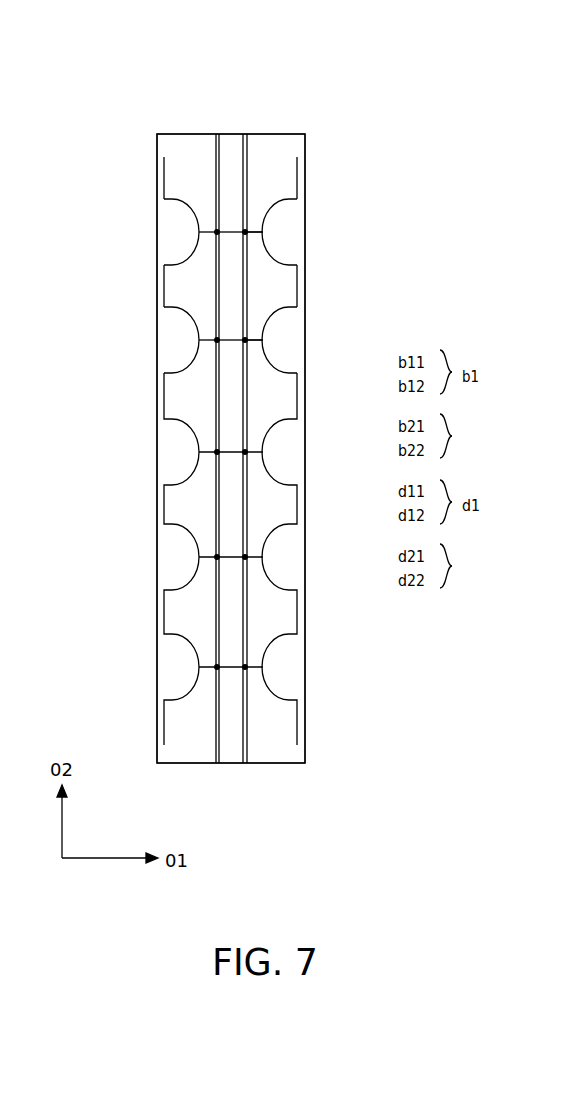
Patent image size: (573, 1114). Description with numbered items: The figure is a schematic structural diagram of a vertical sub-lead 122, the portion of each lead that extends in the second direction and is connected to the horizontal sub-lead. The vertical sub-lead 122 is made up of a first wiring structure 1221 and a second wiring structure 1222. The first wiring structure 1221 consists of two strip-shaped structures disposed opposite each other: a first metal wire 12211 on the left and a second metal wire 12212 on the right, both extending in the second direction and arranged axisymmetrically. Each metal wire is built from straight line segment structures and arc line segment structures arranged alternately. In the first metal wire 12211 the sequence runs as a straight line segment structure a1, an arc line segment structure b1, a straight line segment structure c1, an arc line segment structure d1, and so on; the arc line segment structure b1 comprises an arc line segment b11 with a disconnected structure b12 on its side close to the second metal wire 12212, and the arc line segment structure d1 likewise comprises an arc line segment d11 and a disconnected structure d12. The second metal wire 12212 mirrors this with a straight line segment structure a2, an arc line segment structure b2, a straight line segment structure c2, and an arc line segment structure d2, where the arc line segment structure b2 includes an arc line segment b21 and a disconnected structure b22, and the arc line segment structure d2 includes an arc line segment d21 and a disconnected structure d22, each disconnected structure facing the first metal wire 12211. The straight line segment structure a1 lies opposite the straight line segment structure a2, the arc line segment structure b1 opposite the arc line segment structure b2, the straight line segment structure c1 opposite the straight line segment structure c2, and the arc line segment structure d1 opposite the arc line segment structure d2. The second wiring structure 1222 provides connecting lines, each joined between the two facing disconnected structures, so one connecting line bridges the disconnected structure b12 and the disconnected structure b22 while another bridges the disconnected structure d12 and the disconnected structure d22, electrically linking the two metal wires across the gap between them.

The vertical sub-lead 122 is at (150, 80).
The first wiring structure 1221 is at (307, 388).
The first metal wire 12211 is at (197, 135).
The second metal wire 12212 is at (305, 135).
The second wiring structure 1222 is at (228, 764).
The straight line segment structure a1 is at (164, 183).
The straight line segment structure a2 is at (297, 183).
The arc line segment b11 is at (197, 243).
The disconnected structure b12 is at (210, 240).
The arc line segment structure b1 is at (242, 230).
The arc line segment b21 is at (266, 243).
The disconnected structure b22 is at (253, 240).
The arc line segment structure b2 is at (362, 341).
The straight line segment structure c1 is at (164, 292).
The straight line segment structure c2 is at (297, 292).
The arc line segment d11 is at (197, 351).
The disconnected structure d12 is at (210, 348).
The arc line segment structure d1 is at (242, 338).
The arc line segment d21 is at (266, 351).
The disconnected structure d22 is at (253, 348).
The arc line segment structure d2 is at (362, 460).